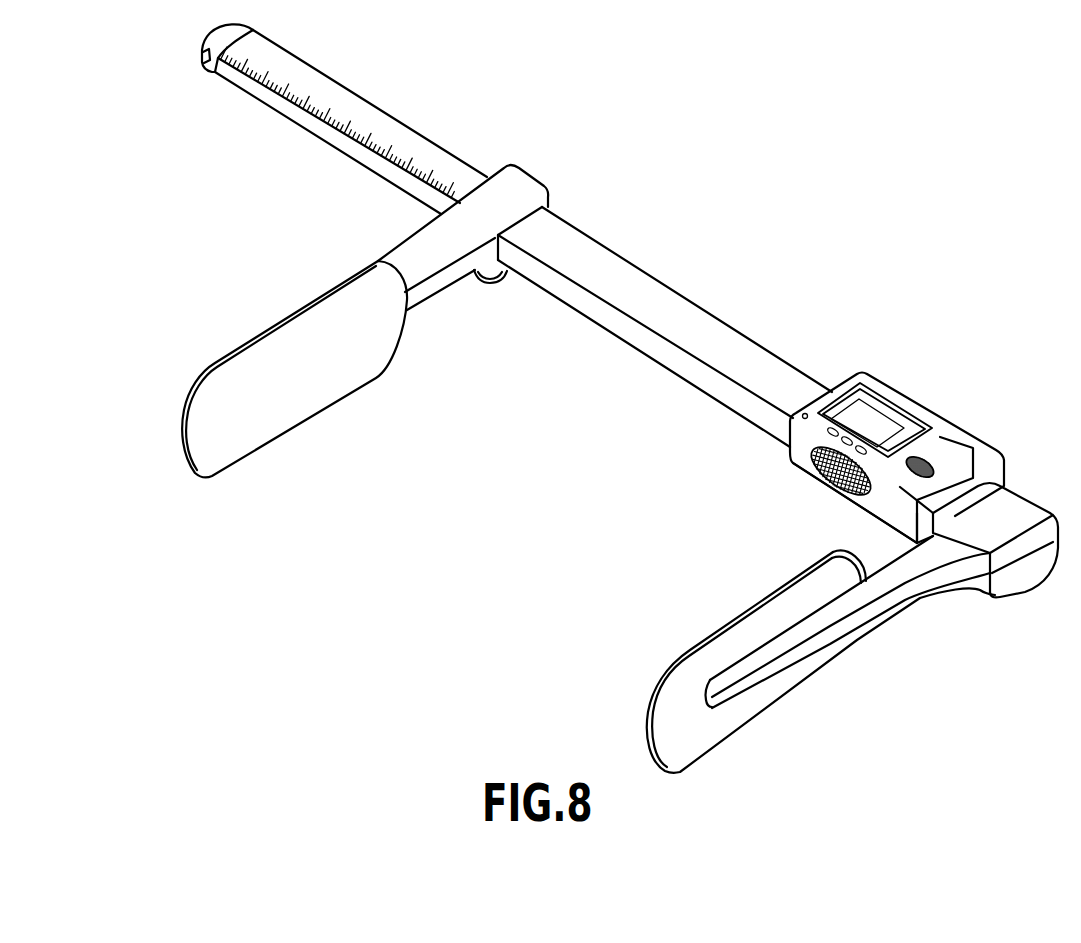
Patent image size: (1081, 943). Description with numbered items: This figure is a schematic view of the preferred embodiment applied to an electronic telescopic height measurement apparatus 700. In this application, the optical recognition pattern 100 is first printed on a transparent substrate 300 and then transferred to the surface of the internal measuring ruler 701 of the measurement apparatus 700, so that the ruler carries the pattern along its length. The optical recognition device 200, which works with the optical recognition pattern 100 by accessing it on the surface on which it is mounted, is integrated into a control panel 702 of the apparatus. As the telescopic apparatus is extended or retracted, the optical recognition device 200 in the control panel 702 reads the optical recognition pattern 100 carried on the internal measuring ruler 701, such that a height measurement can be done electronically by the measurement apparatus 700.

The electronic telescopic height measurement apparatus 700 is at (813, 202).
The optical recognition pattern 100 is at (933, 416).
The control panel 702 is at (868, 377).
The internal measuring ruler 701 is at (810, 481).
The optical recognition device 200 is at (833, 497).
The transparent substrate 300 is at (861, 498).